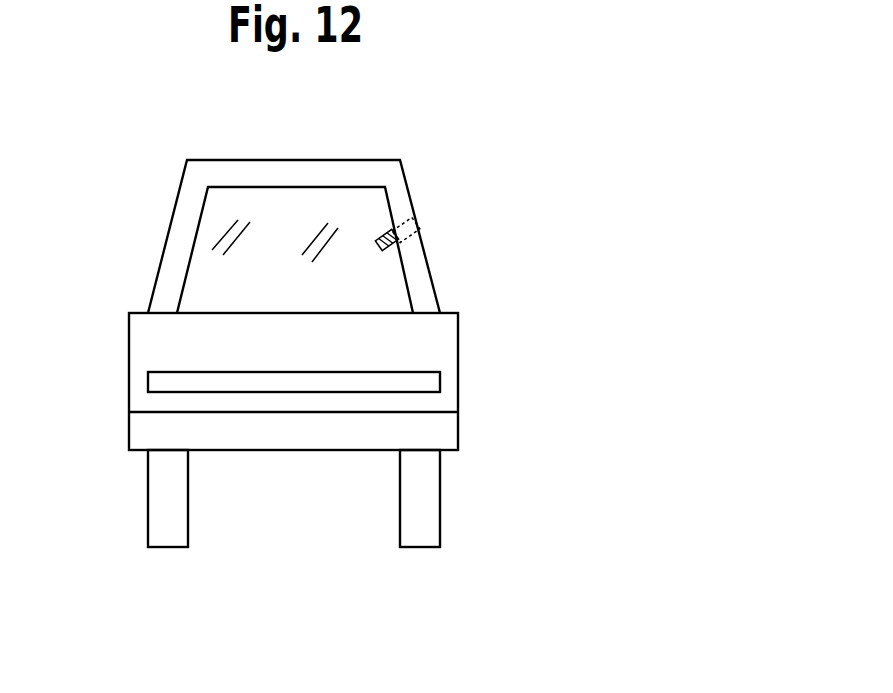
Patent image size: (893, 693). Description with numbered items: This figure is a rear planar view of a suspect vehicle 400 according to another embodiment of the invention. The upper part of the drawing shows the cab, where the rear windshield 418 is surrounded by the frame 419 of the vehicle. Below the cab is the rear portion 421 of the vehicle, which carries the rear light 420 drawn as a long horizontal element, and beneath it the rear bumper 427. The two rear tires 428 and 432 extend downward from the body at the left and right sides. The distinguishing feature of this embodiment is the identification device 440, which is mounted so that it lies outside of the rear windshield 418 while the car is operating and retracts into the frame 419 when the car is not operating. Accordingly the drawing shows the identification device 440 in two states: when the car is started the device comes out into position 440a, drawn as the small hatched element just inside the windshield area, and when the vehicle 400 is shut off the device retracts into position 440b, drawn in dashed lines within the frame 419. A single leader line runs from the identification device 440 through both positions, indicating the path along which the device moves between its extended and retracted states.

The suspect vehicle 400 is at (418, 140).
The rear windshield 418 is at (312, 212).
The frame 419 is at (190, 192).
The rear light 420 is at (365, 380).
The rear portion 421 is at (252, 353).
The rear bumper 427 is at (200, 442).
The rear tire 428 is at (168, 537).
The rear tire 432 is at (418, 532).
The identification device 440 is at (422, 213).
The position 440a is at (359, 253).
The position 440b is at (397, 233).